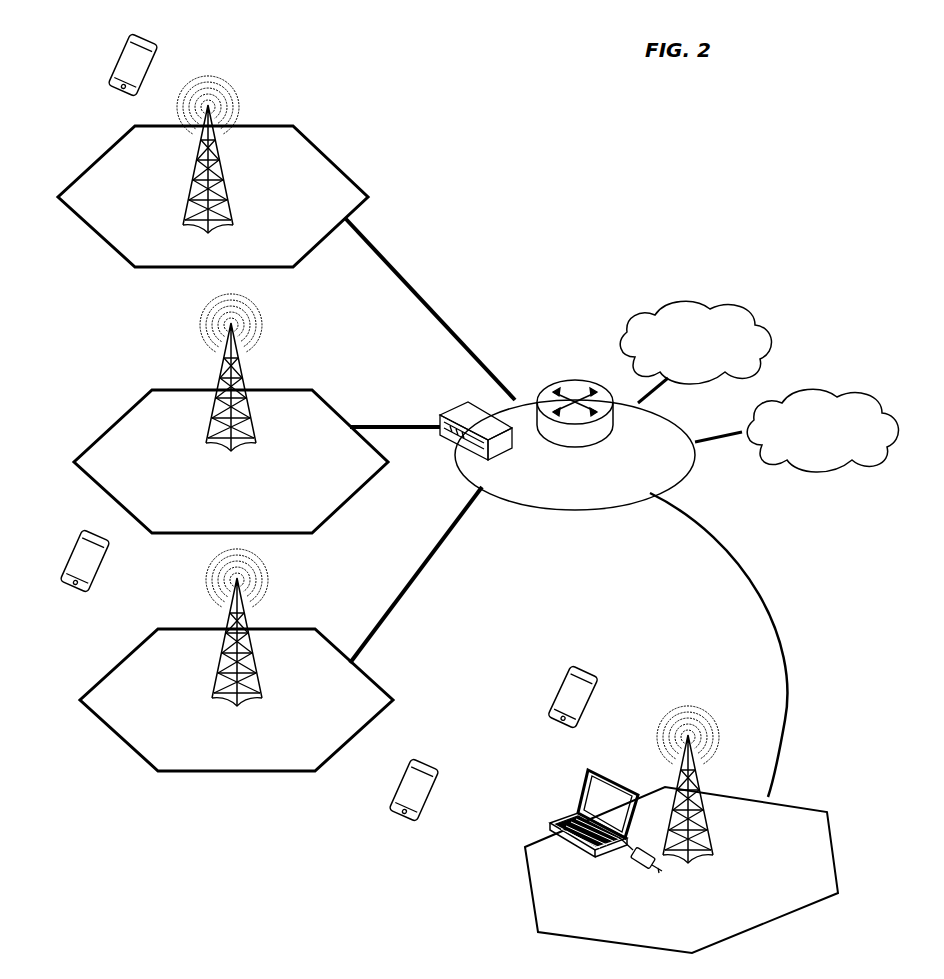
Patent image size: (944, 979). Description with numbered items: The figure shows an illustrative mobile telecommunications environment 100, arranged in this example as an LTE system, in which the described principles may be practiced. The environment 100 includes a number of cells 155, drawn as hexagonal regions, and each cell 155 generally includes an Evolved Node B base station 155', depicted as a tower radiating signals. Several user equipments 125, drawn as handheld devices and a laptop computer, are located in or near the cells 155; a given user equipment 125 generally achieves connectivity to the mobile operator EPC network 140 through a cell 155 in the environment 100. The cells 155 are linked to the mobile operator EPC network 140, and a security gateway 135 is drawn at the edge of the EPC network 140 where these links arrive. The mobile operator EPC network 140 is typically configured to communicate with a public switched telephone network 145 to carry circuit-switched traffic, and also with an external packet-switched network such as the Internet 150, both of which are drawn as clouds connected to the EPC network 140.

The mobile telecommunications environment 100 is at (557, 287).
The user equipment 125 is at (127, 40).
The security gateway (SeGW) 135 is at (465, 403).
The mobile operator EPC network 140 is at (543, 511).
The public switched telephone network 145 is at (835, 389).
The Internet 150 is at (663, 296).
The cell 155 is at (448, 539).
The Evolved Node B base station 155' is at (463, 463).